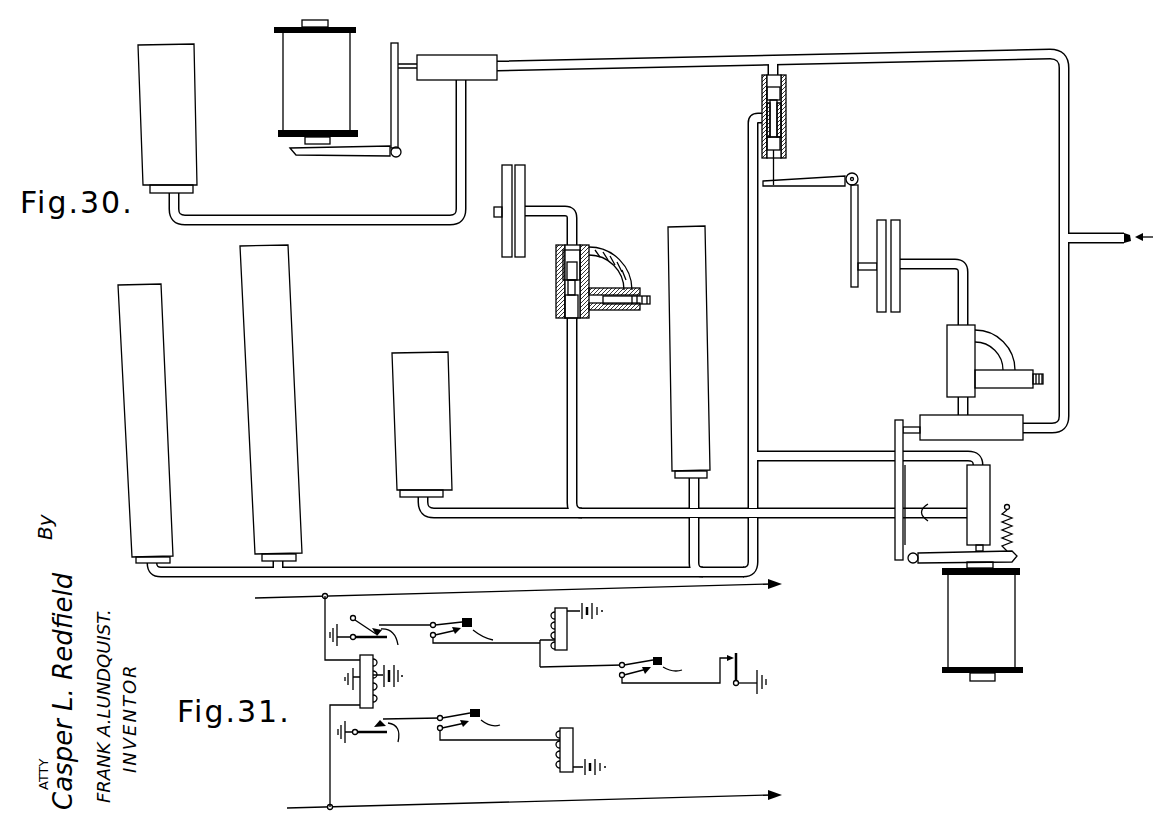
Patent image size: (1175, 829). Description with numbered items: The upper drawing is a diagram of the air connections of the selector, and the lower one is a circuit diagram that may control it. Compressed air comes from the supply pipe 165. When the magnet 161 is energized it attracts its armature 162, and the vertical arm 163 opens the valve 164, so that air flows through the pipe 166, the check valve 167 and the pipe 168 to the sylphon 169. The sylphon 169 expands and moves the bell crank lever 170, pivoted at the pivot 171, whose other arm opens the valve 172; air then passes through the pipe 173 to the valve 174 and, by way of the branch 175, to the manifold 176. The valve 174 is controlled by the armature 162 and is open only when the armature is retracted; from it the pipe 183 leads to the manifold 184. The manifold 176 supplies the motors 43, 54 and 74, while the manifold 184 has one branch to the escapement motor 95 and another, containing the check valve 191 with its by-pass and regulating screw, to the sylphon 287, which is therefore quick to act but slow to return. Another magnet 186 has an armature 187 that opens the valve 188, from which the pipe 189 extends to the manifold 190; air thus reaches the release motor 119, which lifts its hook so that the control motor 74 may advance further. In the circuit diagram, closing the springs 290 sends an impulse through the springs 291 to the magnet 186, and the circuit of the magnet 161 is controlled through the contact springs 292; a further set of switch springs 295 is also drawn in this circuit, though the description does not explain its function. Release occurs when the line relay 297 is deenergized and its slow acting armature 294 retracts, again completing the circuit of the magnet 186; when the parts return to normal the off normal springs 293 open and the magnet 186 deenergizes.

In FIG. 30, the release motor 119 is at (183, 134).
In FIG. 30, the release magnet 186 is at (305, 58).
In FIG. 31, the release magnet 186 is at (570, 645).
In FIG. 30, the armature 187 is at (383, 155).
In FIG. 30, the valve 188 is at (460, 66).
In FIG. 30, the pipe 189 is at (462, 122).
In FIG. 30, the manifold 190 is at (292, 222).
In FIG. 30, the supply pipe 165 is at (765, 60).
In FIG. 30, the valve 172 is at (787, 108).
In FIG. 30, the pivot 171 is at (858, 178).
In FIG. 30, the bell crank lever 170 is at (850, 222).
In FIG. 30, the sylphon 169 is at (893, 233).
In FIG. 30, the pipe 168 is at (962, 300).
In FIG. 30, the check valve 167 is at (960, 345).
In FIG. 30, the pipe 166 is at (963, 405).
In FIG. 30, the valve 164 is at (985, 425).
In FIG. 30, the valve 174 is at (985, 480).
In FIG. 30, the vertical arm 163 is at (896, 474).
In FIG. 30, the pipe 183 is at (940, 518).
In FIG. 30, the armature 162 is at (1013, 560).
In FIG. 30, the magnet 161 is at (1000, 603).
In FIG. 31, the magnet 161 is at (573, 732).
In FIG. 30, the pipe 173 is at (758, 432).
In FIG. 30, the branch 175 is at (762, 491).
In FIG. 30, the manifold 184 is at (610, 515).
In FIG. 30, the manifold 176 is at (333, 574).
In FIG. 30, the motor 43 is at (686, 436).
In FIG. 30, the escapement motor 95 is at (430, 422).
In FIG. 30, the motor 54 is at (285, 427).
In FIG. 30, the control motor 74 is at (157, 445).
In FIG. 30, the sylphon 287 is at (520, 187).
In FIG. 30, the check valve 191 is at (557, 290).
In FIG. 31, the springs 290 is at (736, 651).
In FIG. 31, the springs 291 is at (637, 664).
In FIG. 31, the contact springs 292 is at (499, 724).
In FIG. 31, the off normal springs 293 is at (493, 641).
In FIG. 31, the slow acting armature 294 is at (384, 641).
In FIG. 31, the switch 295 is at (389, 744).
In FIG. 31, the line relay 297 is at (358, 670).